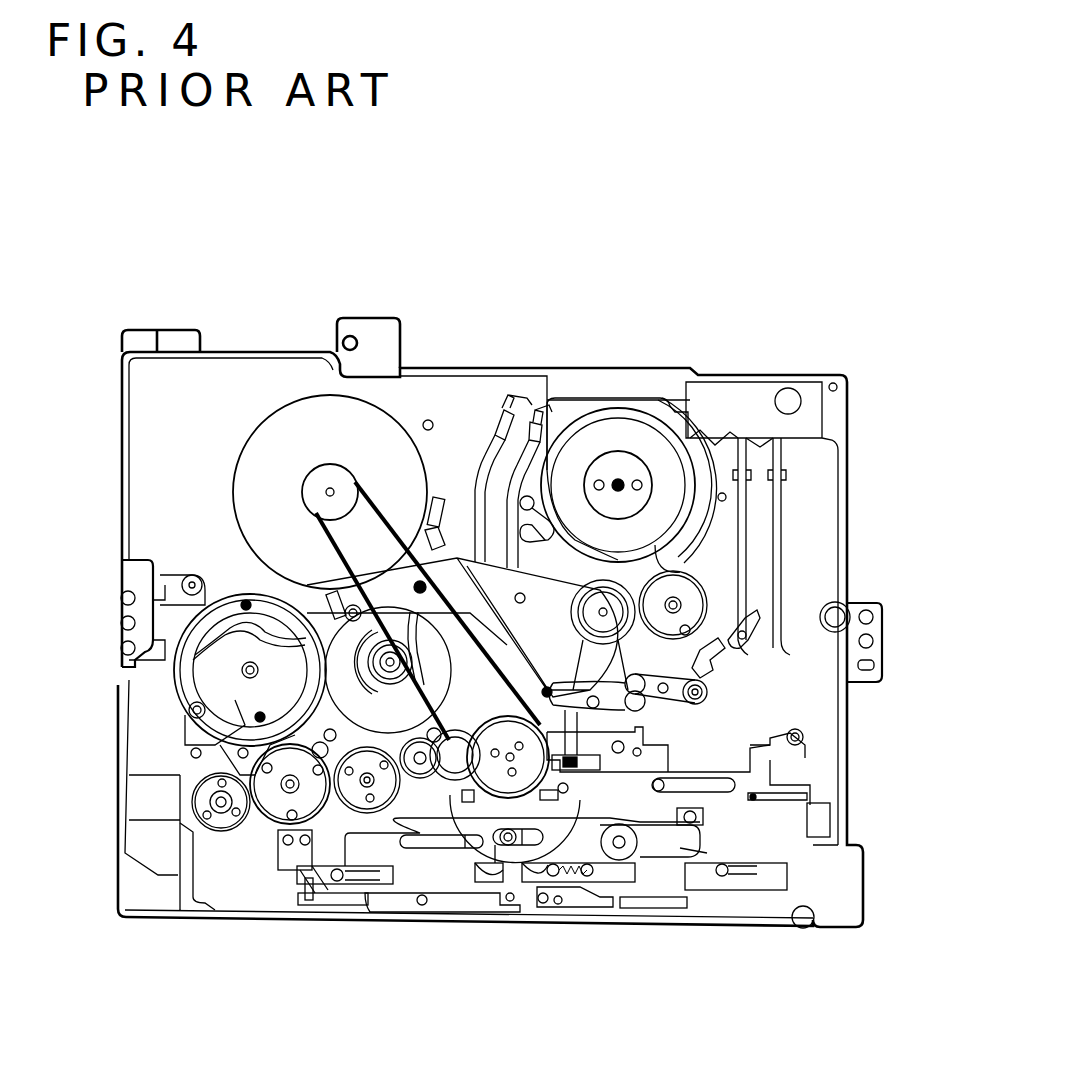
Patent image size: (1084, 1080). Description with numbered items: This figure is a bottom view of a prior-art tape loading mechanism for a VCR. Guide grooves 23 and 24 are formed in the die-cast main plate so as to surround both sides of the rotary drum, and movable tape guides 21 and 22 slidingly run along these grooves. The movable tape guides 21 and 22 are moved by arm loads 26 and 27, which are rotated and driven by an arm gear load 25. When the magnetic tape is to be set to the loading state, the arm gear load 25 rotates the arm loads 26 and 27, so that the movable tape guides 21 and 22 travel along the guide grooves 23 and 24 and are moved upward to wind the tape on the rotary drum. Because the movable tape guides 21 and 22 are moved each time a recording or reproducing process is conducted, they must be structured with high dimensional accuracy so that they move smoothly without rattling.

The movable tape guide 21 is at (745, 657).
The movable tape guide 22 is at (553, 692).
The guide groove 23 is at (763, 483).
The guide groove 24 is at (493, 443).
The arm gear load 25 is at (541, 600).
The arm load 26 is at (593, 595).
The arm load 27 is at (695, 595).